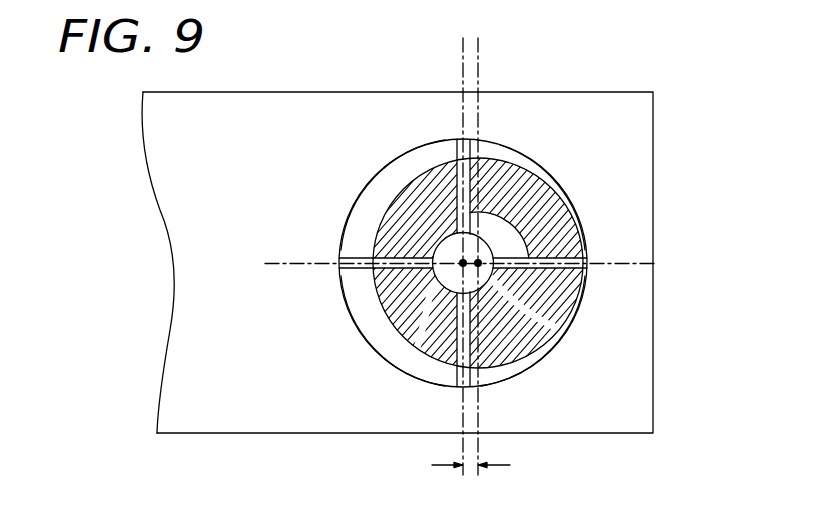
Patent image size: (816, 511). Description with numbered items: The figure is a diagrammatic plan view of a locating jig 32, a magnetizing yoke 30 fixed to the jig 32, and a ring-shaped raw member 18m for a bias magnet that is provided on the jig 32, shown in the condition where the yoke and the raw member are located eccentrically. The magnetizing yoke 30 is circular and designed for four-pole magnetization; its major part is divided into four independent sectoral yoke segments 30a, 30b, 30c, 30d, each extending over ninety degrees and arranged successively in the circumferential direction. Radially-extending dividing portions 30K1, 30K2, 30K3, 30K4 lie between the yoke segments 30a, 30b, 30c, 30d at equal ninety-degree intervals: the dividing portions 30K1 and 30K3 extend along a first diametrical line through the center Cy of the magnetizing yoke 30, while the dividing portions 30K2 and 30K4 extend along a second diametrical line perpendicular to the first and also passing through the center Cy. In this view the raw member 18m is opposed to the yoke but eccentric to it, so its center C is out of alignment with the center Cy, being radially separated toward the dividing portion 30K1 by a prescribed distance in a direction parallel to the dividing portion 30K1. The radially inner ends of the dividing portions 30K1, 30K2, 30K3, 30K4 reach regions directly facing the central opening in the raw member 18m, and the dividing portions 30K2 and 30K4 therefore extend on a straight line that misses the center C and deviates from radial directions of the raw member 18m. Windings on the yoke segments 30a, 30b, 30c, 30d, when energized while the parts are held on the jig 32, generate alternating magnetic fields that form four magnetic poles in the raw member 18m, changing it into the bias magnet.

The locating jig 32 is at (325, 117).
The magnetizing yoke 30 is at (500, 142).
The yoke segment 30a is at (524, 163).
The yoke segment 30b is at (534, 364).
The yoke segment 30c is at (362, 328).
The yoke segment 30d is at (400, 177).
The dividing portion 30K1 is at (577, 245).
The dividing portion 30K2 is at (458, 381).
The dividing portion 30K3 is at (347, 270).
The dividing portion 30K4 is at (440, 138).
The raw member 18m is at (550, 213).
The center of the raw member C is at (478, 263).
The center of the magnetizing yoke Cy is at (463, 264).